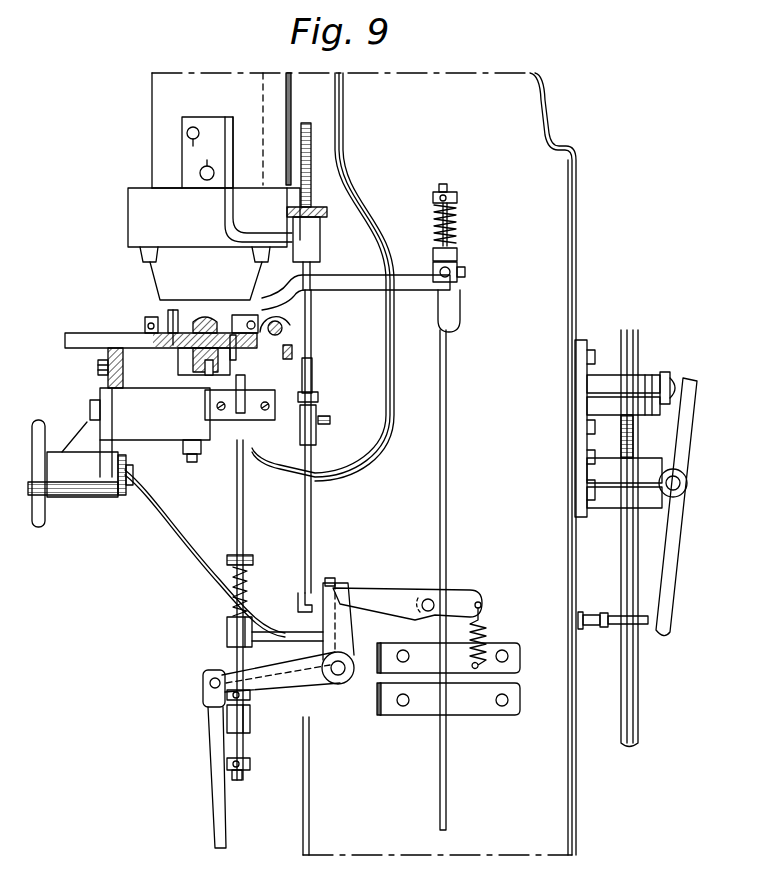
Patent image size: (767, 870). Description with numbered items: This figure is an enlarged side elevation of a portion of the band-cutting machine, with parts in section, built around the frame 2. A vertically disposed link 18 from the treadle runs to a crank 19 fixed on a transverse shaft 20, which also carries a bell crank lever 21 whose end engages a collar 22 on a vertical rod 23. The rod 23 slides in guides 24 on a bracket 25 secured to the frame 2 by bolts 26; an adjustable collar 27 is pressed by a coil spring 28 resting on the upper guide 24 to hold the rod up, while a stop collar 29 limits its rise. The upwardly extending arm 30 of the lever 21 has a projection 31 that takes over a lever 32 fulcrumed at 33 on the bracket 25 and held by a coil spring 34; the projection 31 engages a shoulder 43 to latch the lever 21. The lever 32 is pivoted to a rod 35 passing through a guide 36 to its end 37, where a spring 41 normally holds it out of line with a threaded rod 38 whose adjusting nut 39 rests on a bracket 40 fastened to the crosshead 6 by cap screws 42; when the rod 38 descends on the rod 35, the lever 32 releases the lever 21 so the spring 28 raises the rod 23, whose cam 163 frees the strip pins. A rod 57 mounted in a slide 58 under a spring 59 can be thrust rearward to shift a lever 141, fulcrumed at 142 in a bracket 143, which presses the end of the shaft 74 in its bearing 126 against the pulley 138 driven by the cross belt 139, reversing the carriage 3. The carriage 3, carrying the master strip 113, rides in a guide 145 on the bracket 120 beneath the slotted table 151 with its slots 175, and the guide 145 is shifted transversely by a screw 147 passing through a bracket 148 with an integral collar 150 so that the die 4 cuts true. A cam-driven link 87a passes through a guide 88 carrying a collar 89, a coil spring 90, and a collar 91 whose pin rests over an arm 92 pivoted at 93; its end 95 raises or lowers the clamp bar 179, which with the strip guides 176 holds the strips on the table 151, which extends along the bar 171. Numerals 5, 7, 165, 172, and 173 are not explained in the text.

The frame 2 is at (585, 782).
The carriage 3 is at (186, 357).
The die 4 is at (165, 284).
The housing block 5 is at (135, 219).
The crosshead 6 is at (160, 105).
The bar 7 is at (278, 95).
The link 18 is at (210, 771).
The crank 19 is at (222, 672).
The shaft 20 is at (338, 676).
The bell crank lever 21 is at (316, 680).
The collar 22 is at (250, 697).
The rod 23 is at (244, 492).
The guides 24 is at (236, 630).
The bracket 25 is at (394, 717).
The bolts 26 is at (402, 650).
The collar 27 is at (248, 552).
The coil spring 28 is at (226, 591).
The stop collar 29 is at (250, 765).
The arm 30 is at (326, 622).
The projection 31 is at (333, 583).
The lever 32 is at (378, 598).
The fulcrum 33 is at (426, 598).
The coil spring 34 is at (483, 626).
The rod 35 is at (311, 528).
The guide 36 is at (318, 396).
The end of rod 37 is at (312, 360).
The rod 38 is at (311, 313).
The adjusting nut 39 is at (312, 170).
The bracket 40 is at (312, 243).
The spring 41 is at (330, 420).
The cap screws 42 is at (207, 152).
The shoulder 43 is at (337, 592).
The rod 57 is at (593, 616).
The slide 58 is at (581, 611).
The spring 59 is at (606, 616).
The shaft 74 is at (668, 380).
The link 87a is at (447, 493).
The guide 88 is at (455, 252).
The collar 89 is at (457, 196).
The coil spring 90 is at (455, 222).
The collar 91 is at (465, 271).
The arm 92 is at (416, 288).
The pivot 93 is at (272, 336).
The end of arm 95 is at (230, 289).
The master strip 113 is at (213, 363).
The bracket 120 is at (175, 511).
The bearing 126 is at (657, 416).
The pulley 138 is at (639, 346).
The cross belt 139 is at (633, 330).
The lever 141 is at (686, 436).
The fulcrum 142 is at (687, 485).
The bracket 143 is at (613, 510).
The guide 145 is at (98, 340).
The screw 147 is at (130, 495).
The bracket 148 is at (80, 497).
The collar 150 is at (133, 474).
The table 151 is at (160, 348).
The cam 163 is at (245, 388).
The block 165 is at (295, 352).
The bar 171 is at (108, 385).
The bolt 172 is at (98, 367).
The pin 173 is at (234, 352).
The slots 175 is at (186, 320).
The strip guides 176 is at (161, 310).
The bar 179 is at (208, 316).